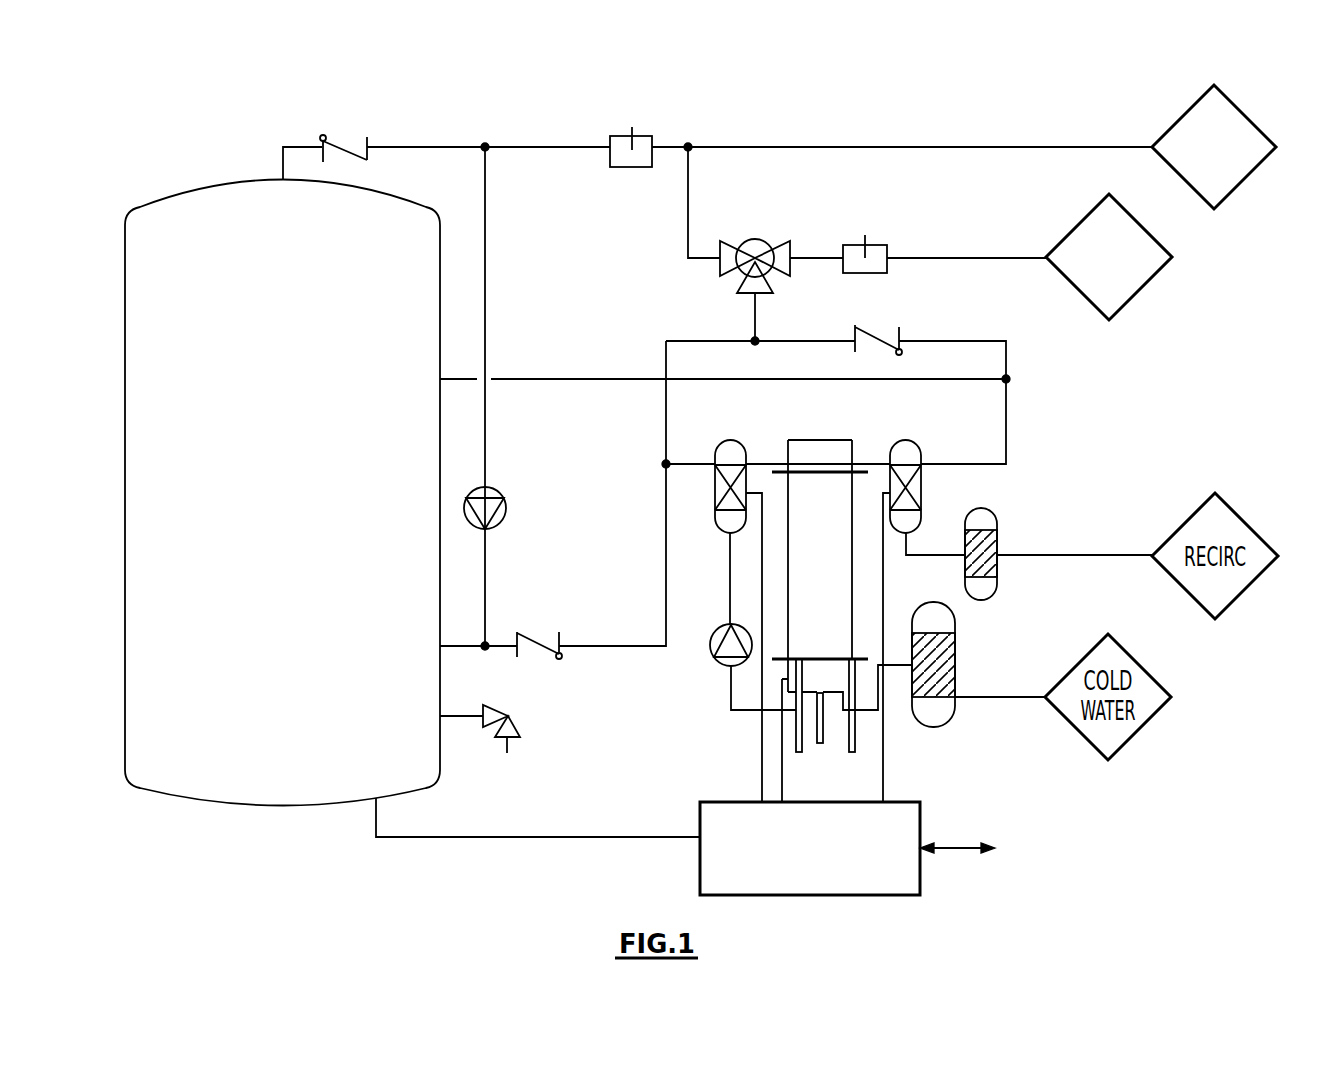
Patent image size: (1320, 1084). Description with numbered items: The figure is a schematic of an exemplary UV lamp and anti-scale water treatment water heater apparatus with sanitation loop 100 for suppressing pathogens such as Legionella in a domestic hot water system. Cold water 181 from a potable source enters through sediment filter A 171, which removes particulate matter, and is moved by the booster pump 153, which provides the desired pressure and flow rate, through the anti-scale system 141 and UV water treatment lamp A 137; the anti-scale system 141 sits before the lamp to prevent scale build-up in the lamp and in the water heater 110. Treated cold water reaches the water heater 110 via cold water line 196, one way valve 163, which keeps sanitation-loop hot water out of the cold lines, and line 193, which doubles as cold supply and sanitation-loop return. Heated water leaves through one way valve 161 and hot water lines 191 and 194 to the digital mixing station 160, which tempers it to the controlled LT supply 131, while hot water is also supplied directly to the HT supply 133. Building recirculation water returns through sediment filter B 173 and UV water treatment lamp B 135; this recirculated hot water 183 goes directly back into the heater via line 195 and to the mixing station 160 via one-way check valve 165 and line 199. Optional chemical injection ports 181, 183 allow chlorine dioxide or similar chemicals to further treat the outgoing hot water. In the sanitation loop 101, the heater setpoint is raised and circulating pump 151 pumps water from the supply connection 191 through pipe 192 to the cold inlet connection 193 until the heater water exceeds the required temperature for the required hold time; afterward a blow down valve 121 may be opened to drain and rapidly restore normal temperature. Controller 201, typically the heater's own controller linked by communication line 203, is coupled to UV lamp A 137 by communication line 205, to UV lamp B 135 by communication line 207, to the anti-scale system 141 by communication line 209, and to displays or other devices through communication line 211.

The UV lamp and anti-scale water treatment water heater apparatus with sanitation lo 100 is at (214, 98).
The sanitation loop 101 is at (540, 288).
The water heater 110 is at (235, 806).
The blow down valve 121 is at (535, 795).
The LT supply 131 is at (1046, 257).
The HT supply 133 is at (1152, 147).
The UV water treatment lamp (B) 135 is at (921, 493).
The UV water treatment lamp (A) 137 is at (722, 533).
The anti-scale system 141 is at (805, 563).
The circulating pump 151 is at (497, 526).
The booster pump 153 is at (716, 663).
The digital mixing station 160 is at (721, 265).
The one way valve 161 is at (345, 137).
The one way valve 163 is at (543, 660).
The one-way check valve 165 is at (899, 330).
The sediment filter (A) 171 is at (955, 664).
The sediment filter (B) 173 is at (997, 523).
The chemical injection port 181 is at (611, 167).
The chemical injection port 183 is at (889, 250).
The hot water line 191 is at (405, 146).
The pipe 192 is at (485, 317).
The line 193 is at (462, 647).
The hot water line 194 is at (560, 146).
The line 195 is at (577, 379).
The cold water line 196 is at (592, 645).
The line 199 is at (772, 340).
The controller 201 is at (789, 880).
The communication line 203 is at (520, 838).
The communication line 205 is at (760, 594).
The communication line 207 is at (884, 596).
The communication line 209 is at (783, 763).
The communication line 211 is at (958, 850).